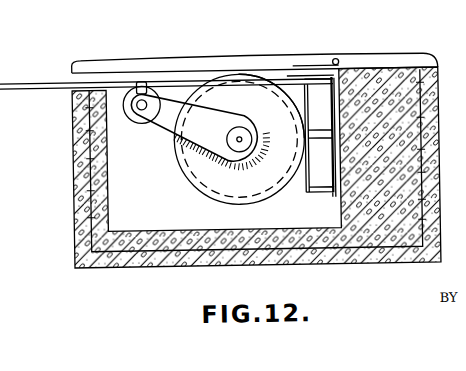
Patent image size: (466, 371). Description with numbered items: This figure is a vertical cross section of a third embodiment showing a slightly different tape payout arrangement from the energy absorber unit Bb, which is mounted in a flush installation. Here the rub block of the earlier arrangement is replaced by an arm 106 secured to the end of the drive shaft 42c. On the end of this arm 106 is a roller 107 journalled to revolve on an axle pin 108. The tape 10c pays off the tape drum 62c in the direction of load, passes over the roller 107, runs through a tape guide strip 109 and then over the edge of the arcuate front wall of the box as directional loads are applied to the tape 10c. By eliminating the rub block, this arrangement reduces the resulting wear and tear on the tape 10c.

The tape 10c is at (190, 85).
The tape guide strip 109 is at (146, 83).
The roller 107 is at (130, 121).
The arm 106 is at (199, 122).
The tape drum 62c is at (246, 93).
The energy absorber unit Bb is at (265, 105).
The drive shaft 42c is at (244, 145).
The axle pin 108 is at (149, 120).